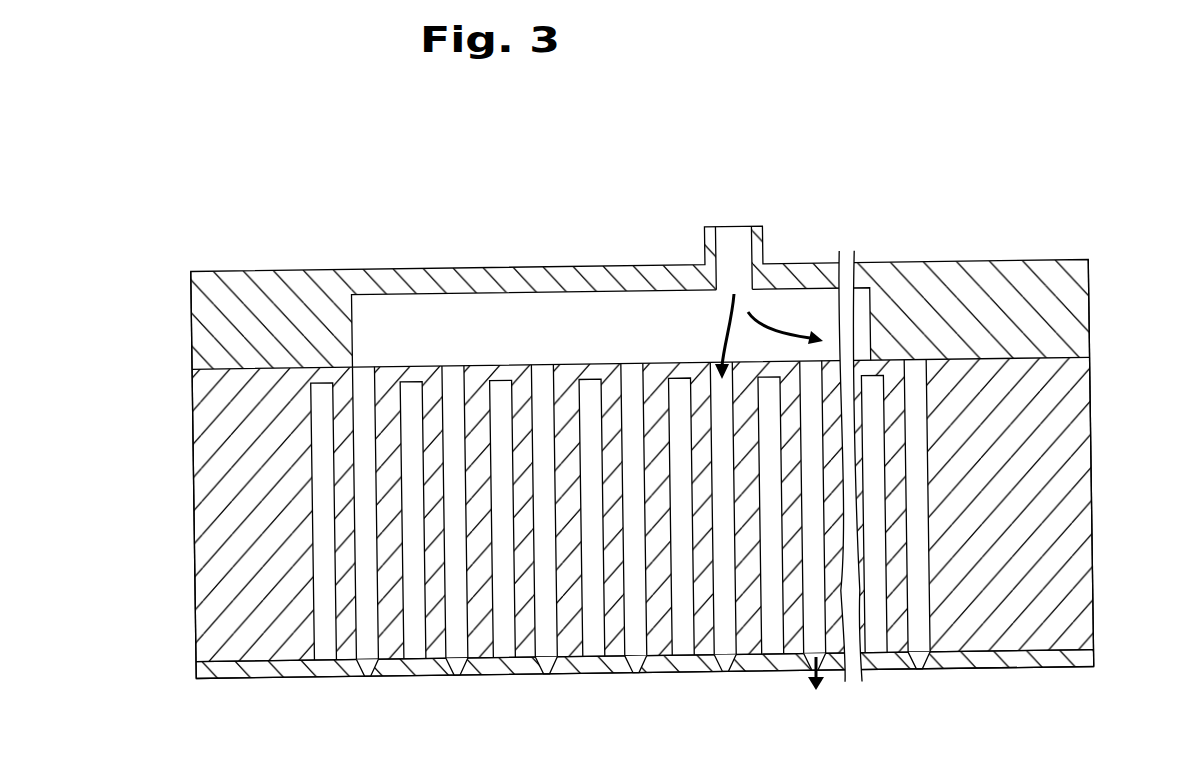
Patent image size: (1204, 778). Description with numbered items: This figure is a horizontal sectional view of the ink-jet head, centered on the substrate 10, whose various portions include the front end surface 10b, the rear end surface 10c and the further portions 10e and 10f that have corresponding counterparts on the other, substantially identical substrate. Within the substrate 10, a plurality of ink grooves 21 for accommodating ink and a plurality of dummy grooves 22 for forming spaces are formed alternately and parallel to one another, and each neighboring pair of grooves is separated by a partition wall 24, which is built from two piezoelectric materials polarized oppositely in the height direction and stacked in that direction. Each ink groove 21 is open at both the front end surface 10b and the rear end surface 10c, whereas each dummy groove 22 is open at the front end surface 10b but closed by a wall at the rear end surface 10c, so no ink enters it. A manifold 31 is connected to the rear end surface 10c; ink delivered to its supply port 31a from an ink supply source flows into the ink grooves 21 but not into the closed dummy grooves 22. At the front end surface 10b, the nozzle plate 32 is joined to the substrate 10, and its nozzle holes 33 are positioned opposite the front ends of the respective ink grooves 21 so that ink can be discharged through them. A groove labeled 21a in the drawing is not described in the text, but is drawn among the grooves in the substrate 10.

The substrate 10 is at (188, 529).
The front end surface 10b is at (1068, 665).
The rear end surface 10c is at (997, 357).
The portion of the substrate 10e is at (196, 568).
The portion of the substrate 10f is at (1093, 512).
The ink groove 21 is at (365, 587).
The dummy pressure chamber 21a is at (920, 640).
The dummy groove 22 is at (318, 462).
The partition wall 24 is at (695, 664).
The manifold 31 is at (680, 268).
The supply port 31a is at (726, 242).
The nozzle plate 32 is at (497, 668).
The nozzle hole 33 is at (723, 665).